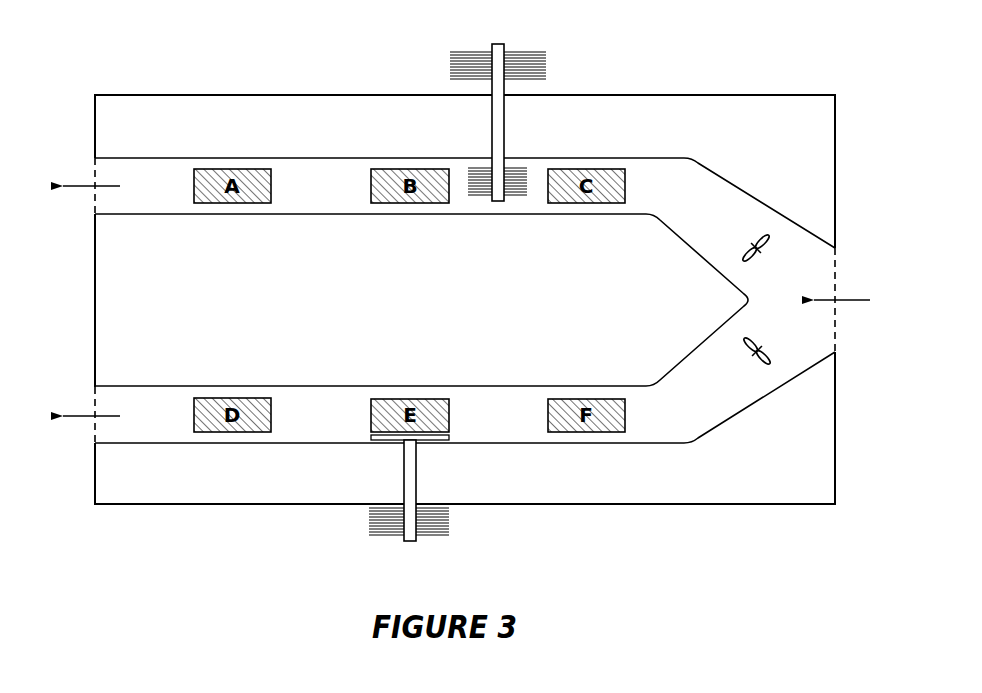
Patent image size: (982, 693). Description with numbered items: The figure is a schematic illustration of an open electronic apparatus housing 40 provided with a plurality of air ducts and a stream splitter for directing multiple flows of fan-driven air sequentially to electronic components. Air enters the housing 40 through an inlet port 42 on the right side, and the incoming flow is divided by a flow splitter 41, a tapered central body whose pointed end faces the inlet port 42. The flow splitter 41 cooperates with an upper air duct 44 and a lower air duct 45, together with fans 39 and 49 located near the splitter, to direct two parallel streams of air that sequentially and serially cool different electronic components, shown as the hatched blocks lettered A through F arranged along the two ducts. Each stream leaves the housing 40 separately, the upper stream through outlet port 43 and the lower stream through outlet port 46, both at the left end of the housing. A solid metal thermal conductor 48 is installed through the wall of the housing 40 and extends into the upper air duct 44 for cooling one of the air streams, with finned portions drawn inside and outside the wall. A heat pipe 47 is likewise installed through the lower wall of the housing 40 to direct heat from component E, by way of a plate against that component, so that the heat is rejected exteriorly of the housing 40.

The fan 39 is at (768, 370).
The electronic apparatus housing 40 is at (730, 95).
The flow splitter 41 is at (752, 296).
The inlet port 42 is at (835, 318).
The outlet port 43 is at (95, 172).
The air duct 44 is at (540, 158).
The air duct 45 is at (540, 443).
The outlet port 46 is at (95, 400).
The heat pipe 47 is at (404, 480).
The solid metal thermal conductor 48 is at (492, 87).
The fan 49 is at (770, 234).